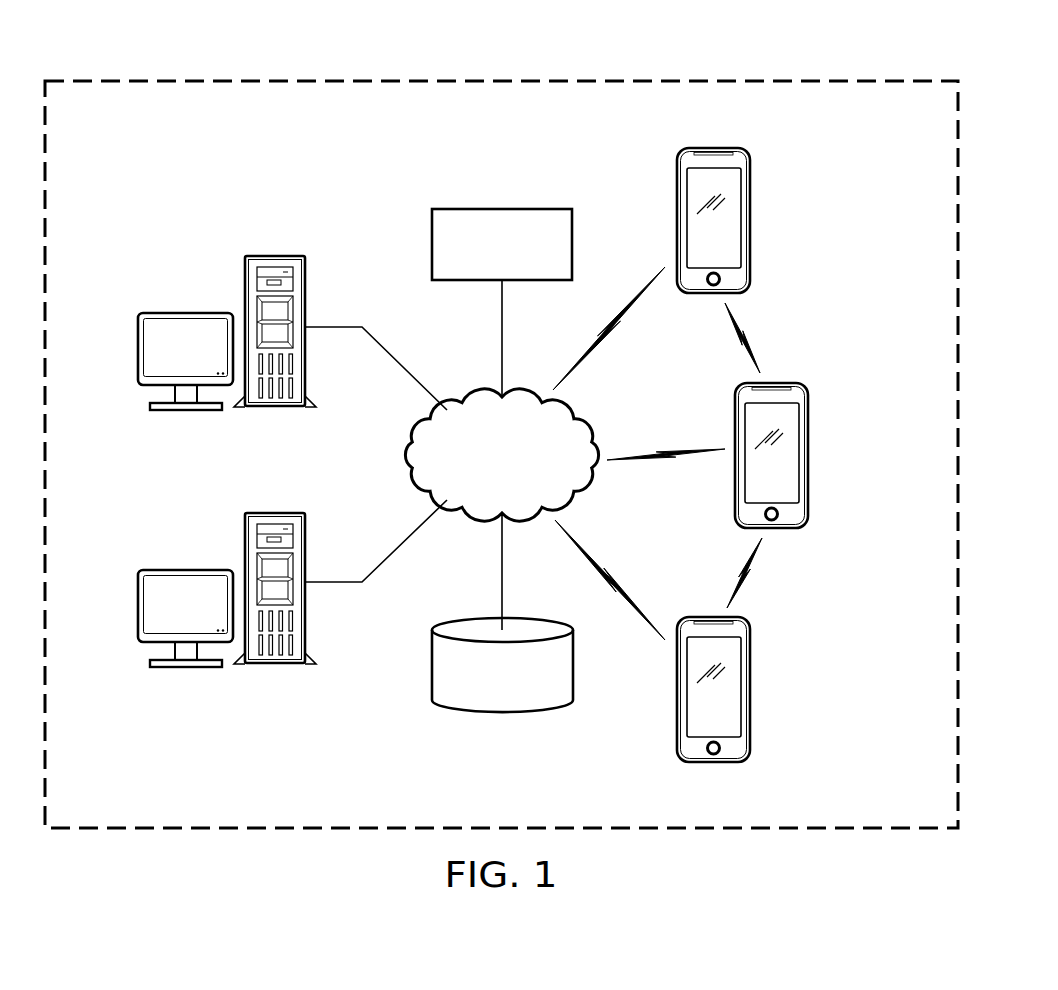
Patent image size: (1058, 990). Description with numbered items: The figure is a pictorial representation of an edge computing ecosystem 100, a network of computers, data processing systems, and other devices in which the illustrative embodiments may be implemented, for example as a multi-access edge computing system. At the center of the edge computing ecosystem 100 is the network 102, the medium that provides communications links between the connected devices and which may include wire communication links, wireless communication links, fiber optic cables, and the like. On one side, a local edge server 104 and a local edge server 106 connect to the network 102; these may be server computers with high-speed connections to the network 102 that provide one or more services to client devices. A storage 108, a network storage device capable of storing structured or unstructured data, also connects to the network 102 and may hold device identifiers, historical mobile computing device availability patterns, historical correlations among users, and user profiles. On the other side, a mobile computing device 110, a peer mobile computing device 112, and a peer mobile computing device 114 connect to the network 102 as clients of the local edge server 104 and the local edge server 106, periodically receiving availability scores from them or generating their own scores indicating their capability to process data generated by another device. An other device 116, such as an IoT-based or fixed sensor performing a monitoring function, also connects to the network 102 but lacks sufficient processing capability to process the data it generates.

The edge computing ecosystem 100 is at (361, 82).
The network 102 is at (478, 398).
The local edge server 104 is at (138, 346).
The local edge server 106 is at (138, 606).
The storage 108 is at (432, 665).
The mobile computing device 110 is at (750, 220).
The peer mobile computing device 112 is at (808, 452).
The peer mobile computing device 114 is at (750, 688).
The other device 116 is at (432, 243).